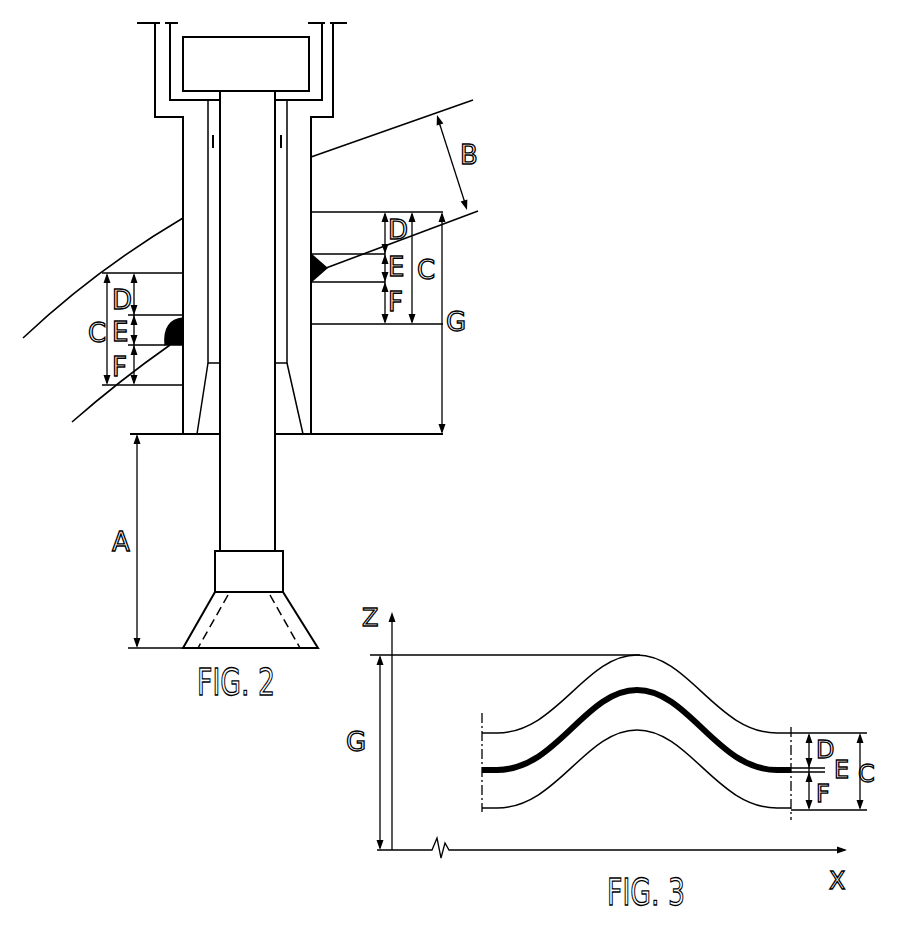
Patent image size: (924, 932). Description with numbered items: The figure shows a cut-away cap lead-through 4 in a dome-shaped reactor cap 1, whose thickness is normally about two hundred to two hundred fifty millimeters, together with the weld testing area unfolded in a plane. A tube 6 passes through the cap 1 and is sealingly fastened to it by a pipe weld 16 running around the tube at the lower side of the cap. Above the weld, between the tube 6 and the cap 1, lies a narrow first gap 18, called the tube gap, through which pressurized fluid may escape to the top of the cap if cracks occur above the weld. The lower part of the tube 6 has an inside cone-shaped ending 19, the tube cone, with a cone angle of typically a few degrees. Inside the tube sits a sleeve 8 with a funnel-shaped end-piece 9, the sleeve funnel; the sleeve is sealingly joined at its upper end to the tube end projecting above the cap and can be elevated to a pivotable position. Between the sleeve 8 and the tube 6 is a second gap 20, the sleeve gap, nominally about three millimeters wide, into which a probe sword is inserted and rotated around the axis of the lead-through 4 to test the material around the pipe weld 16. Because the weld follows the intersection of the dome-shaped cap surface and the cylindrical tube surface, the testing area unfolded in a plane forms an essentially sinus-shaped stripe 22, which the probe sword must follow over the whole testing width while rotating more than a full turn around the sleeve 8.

In FIG. 2, the cap 1 is at (53, 322).
In FIG. 2, the cap lead-through 4 is at (160, 193).
In FIG. 2, the tube 6 is at (187, 160).
In FIG. 2, the sleeve 8 is at (262, 487).
In FIG. 2, the end-piece 9 is at (268, 572).
In FIG. 2, the pipe weld 16 is at (188, 329).
In FIG. 2, the first gap 18 is at (183, 258).
In FIG. 2, the cone-shaped ending 19 is at (296, 409).
In FIG. 2, the second gap 20 is at (285, 346).
In FIG. 3, the sinus-shaped stripe 22 is at (636, 668).